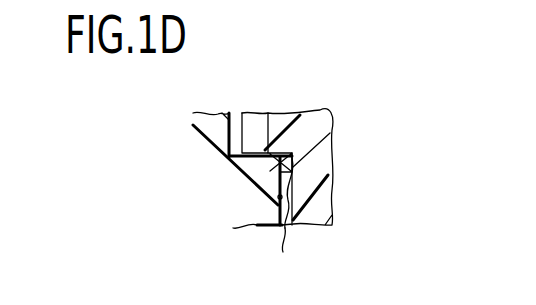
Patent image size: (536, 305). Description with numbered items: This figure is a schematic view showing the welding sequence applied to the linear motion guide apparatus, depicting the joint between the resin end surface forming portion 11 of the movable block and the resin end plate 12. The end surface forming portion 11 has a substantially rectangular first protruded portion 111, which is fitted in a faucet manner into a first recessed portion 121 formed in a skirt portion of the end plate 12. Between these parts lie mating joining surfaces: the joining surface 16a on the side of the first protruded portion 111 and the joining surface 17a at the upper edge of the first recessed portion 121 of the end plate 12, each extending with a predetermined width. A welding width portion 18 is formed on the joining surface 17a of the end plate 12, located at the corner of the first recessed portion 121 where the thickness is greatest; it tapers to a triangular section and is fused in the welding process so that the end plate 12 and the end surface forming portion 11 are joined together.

The welding width portion 18 is at (267, 113).
The end plate 12 is at (320, 112).
The first protruded portion 111 is at (272, 181).
The joining surface 16a is at (252, 222).
The joining surface 17a is at (333, 196).
The end surface forming portion 11 is at (251, 225).
The first recessed portion 121 is at (271, 255).